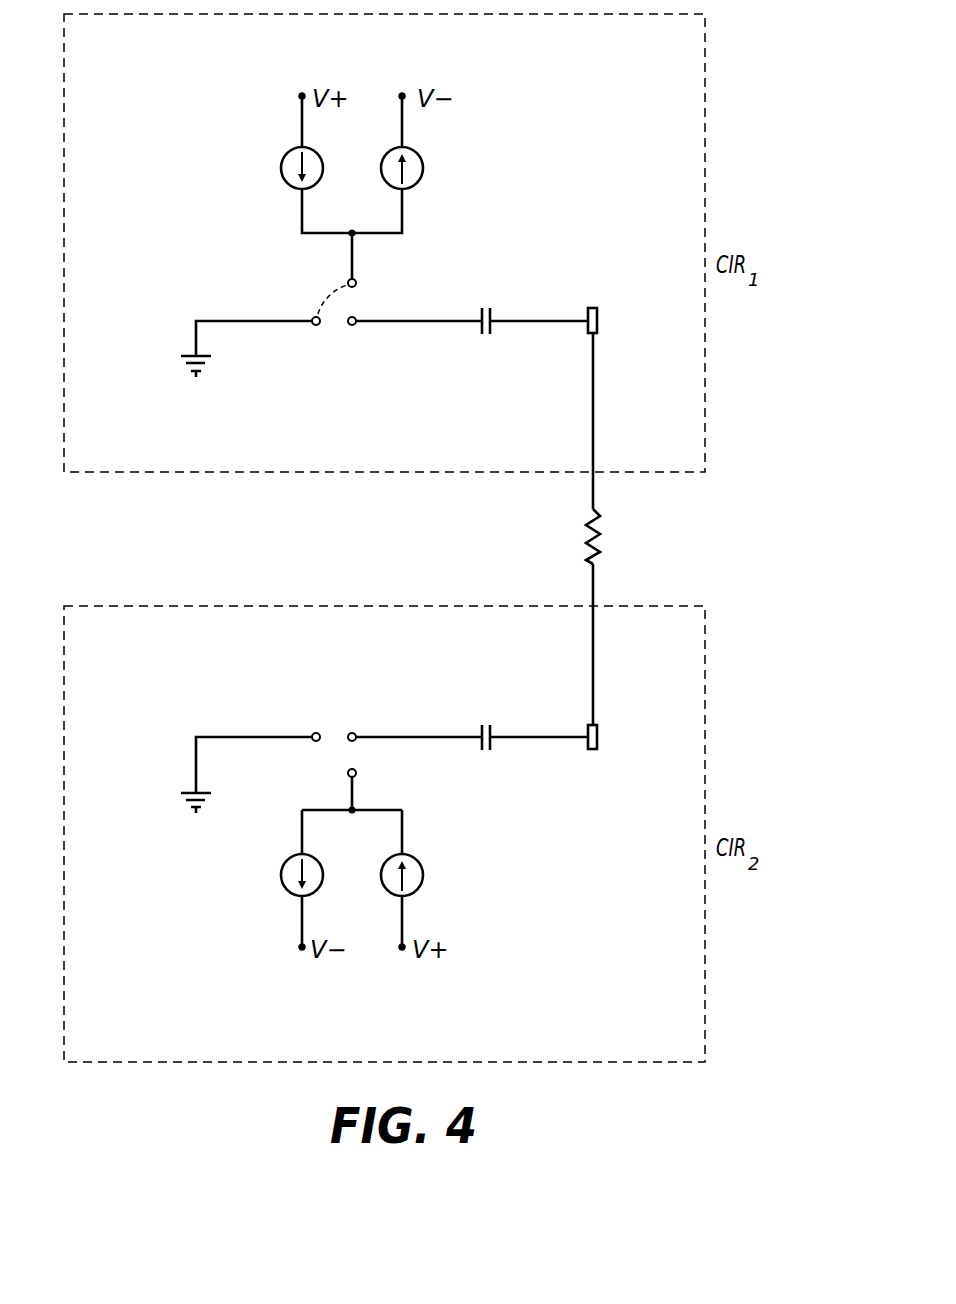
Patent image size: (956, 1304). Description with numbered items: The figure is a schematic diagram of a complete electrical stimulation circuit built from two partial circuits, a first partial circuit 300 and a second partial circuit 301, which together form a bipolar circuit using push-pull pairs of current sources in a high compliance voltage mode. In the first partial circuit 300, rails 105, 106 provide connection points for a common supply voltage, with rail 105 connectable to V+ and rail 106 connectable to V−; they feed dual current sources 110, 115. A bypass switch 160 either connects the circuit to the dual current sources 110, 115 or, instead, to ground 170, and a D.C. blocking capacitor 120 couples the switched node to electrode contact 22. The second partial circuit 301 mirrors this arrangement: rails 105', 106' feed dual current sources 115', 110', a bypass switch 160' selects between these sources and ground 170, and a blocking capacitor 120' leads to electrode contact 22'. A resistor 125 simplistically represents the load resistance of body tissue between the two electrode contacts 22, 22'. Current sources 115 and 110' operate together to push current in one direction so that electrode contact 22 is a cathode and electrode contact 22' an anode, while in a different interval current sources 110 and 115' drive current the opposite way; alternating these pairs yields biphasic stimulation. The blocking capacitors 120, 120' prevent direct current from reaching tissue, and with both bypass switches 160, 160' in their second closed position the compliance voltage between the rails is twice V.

The rail 105 is at (263, 73).
The rail 106 is at (440, 73).
The current source 110 is at (265, 138).
The current source 115 is at (449, 138).
The bypass switch 160 is at (370, 294).
The D.C. blocking capacitor 120 is at (518, 307).
The electrode contact 22 is at (628, 303).
The ground 170 is at (196, 377).
The first partial circuit 300 is at (705, 158).
The resistor 125 is at (599, 534).
The D.C. blocking capacitor 120' is at (521, 723).
The electrode contact 22' is at (630, 719).
The bypass switch 160' is at (372, 764).
The current source 115' is at (279, 850).
The current source 110' is at (439, 850).
The rail 106' is at (278, 978).
The rail 105' is at (429, 978).
The second partial circuit 301 is at (705, 738).